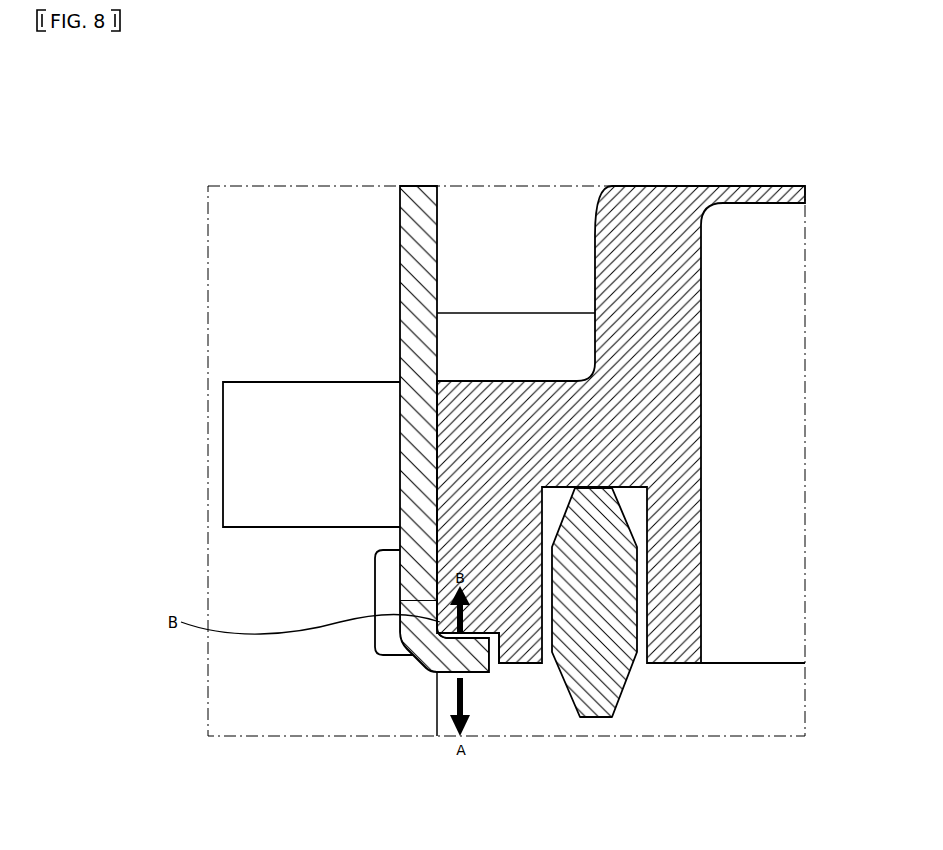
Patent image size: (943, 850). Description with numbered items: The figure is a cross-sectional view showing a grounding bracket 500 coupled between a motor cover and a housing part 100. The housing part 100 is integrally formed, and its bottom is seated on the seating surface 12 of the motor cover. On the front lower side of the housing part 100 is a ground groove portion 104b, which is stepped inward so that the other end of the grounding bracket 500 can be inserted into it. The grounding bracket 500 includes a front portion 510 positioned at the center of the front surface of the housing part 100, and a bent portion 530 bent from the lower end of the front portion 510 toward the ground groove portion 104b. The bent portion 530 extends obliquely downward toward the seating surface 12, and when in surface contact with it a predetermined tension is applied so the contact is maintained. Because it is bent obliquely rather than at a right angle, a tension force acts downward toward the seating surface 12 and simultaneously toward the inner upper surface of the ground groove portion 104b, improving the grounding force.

The housing part 100 is at (586, 218).
The grounding bracket 500 is at (392, 198).
The front portion 510 is at (410, 444).
The bent portion 530 is at (424, 670).
The seating surface 12 is at (545, 648).
The ground groove portion 104b is at (474, 640).